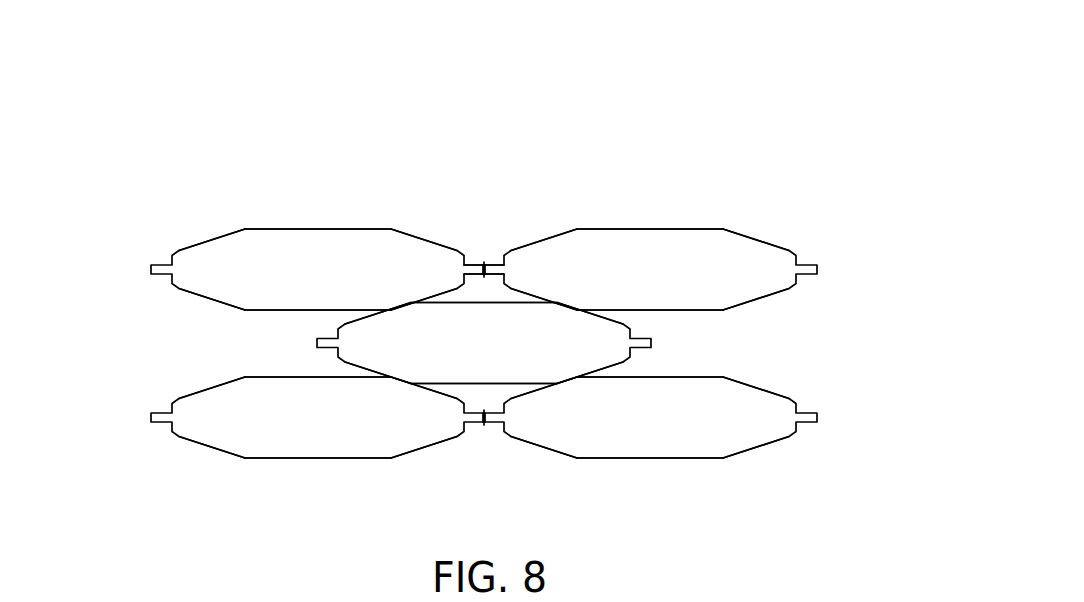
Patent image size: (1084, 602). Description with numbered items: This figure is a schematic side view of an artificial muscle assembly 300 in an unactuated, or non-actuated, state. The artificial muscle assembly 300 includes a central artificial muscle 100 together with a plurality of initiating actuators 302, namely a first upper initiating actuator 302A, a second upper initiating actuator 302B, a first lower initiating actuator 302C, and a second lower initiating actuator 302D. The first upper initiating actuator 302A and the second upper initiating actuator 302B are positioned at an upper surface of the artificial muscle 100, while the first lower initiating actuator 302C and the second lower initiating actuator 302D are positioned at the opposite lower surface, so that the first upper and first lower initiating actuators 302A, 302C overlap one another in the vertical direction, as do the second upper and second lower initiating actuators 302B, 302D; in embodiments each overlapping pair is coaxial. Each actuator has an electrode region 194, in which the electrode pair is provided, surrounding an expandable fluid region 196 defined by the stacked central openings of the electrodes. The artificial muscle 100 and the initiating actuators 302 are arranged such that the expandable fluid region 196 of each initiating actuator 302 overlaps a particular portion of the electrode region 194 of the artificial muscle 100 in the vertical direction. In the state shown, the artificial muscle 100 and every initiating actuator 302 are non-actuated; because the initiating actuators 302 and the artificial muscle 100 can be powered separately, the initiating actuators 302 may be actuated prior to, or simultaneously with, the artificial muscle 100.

The artificial muscle assembly 300 is at (488, 285).
The initiating actuators 302 is at (488, 327).
The first upper initiating actuator 302A is at (264, 215).
The second upper initiating actuator 302B is at (681, 220).
The first lower initiating actuator 302C is at (267, 455).
The second lower initiating actuator 302D is at (708, 455).
The artificial muscle 100 is at (463, 248).
The electrode region 194 is at (484, 345).
The expandable fluid region 196 is at (450, 344).